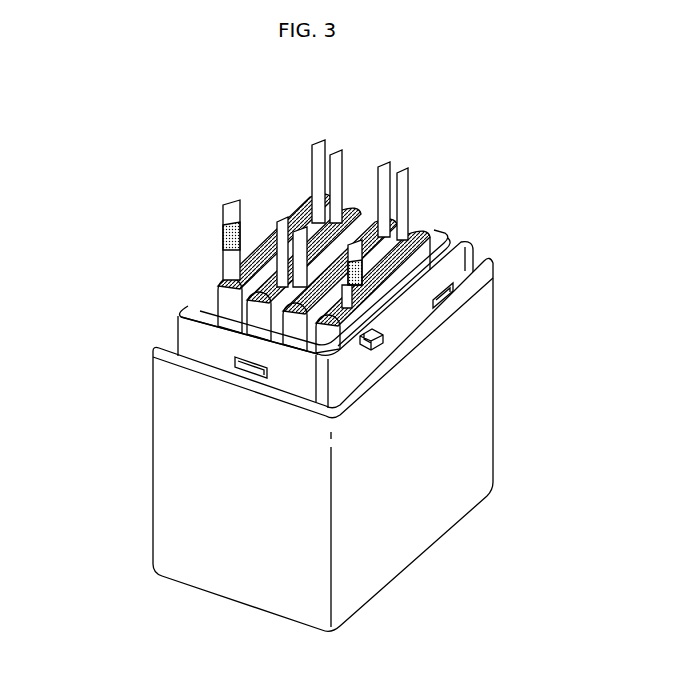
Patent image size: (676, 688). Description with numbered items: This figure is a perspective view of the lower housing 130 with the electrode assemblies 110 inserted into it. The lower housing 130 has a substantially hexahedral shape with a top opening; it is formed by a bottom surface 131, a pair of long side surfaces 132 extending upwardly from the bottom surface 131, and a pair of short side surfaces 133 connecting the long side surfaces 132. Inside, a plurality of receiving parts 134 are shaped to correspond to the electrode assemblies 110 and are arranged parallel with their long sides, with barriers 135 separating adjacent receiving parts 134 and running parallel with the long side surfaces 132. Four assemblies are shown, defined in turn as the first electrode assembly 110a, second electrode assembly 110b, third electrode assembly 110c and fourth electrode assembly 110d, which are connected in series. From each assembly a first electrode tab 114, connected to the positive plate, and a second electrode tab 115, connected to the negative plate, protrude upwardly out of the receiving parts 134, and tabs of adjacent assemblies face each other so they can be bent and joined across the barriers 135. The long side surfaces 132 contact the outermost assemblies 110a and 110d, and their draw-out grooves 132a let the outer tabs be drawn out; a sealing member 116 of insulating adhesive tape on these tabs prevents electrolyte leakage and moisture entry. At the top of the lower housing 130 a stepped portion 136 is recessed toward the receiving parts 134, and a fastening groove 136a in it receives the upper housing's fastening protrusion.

The electrode assemblies 110 is at (231, 273).
The first electrode assembly 110a is at (320, 352).
The second electrode assembly 110b is at (300, 342).
The third electrode assembly 110c is at (264, 320).
The fourth electrode assembly 110d is at (236, 294).
The first electrode tab 114 is at (338, 165).
The second electrode tab 115 is at (353, 238).
The sealing member 116 is at (226, 232).
The lower housing 130 is at (310, 450).
The bottom surface 131 is at (473, 508).
The long side surfaces 132 is at (483, 413).
The draw-out grooves 132a is at (384, 330).
The short side surfaces 133 is at (226, 588).
The receiving parts 134 is at (321, 427).
The barriers 135 is at (300, 358).
The stepped portion 136 is at (190, 384).
The fastening groove 136a is at (250, 378).